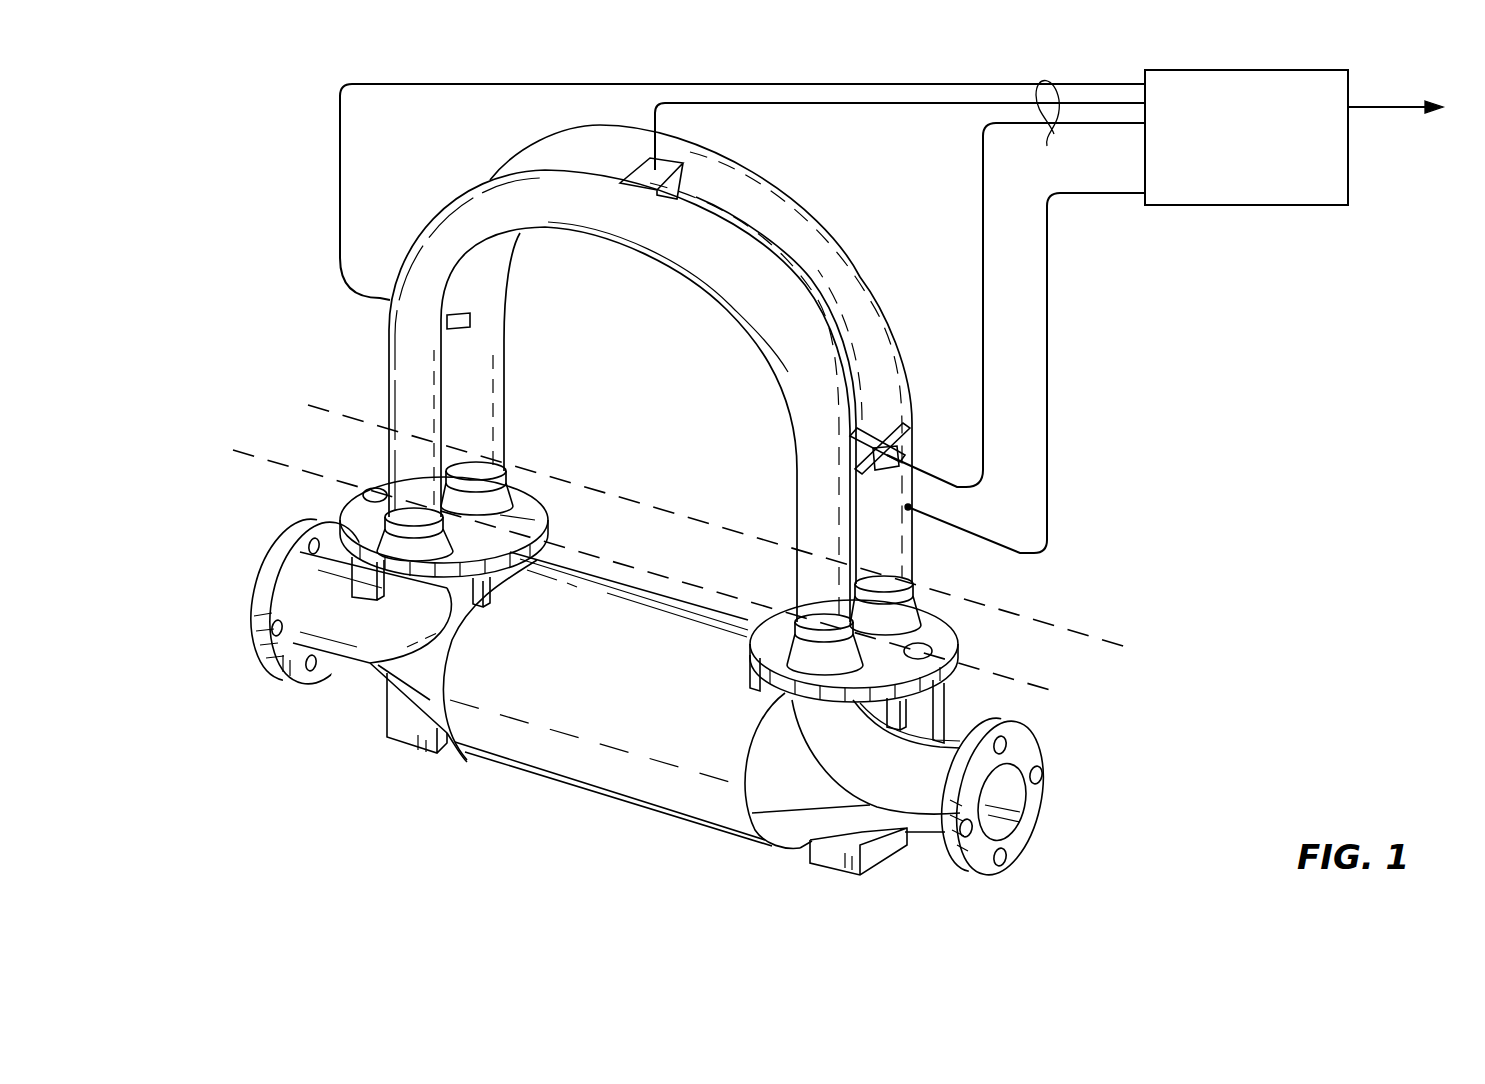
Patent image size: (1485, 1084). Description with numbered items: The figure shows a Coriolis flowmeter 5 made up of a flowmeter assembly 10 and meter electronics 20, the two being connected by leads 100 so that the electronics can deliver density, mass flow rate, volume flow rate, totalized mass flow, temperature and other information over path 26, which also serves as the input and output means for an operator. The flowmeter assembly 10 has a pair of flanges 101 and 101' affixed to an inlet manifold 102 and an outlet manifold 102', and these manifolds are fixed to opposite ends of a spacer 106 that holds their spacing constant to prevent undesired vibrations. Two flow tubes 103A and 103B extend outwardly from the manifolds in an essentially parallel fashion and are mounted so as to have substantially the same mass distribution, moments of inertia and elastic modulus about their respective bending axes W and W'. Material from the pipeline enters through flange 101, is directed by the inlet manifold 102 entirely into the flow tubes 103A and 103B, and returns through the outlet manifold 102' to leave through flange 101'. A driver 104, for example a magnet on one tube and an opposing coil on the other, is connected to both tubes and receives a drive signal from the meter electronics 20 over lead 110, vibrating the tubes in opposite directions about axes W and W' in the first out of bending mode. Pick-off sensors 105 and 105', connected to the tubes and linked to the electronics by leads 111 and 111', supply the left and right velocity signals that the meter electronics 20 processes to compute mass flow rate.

The flowmeter assembly 10 is at (196, 228).
The Coriolis flowmeter 5 is at (1103, 416).
The meter electronics 20 is at (1245, 206).
The path 26 is at (1388, 110).
The leads 100 is at (1025, 317).
The lead 110 is at (910, 104).
The lead 111 is at (700, 192).
The lead 111' is at (1016, 305).
The flange 101 is at (283, 601).
The flange 101' is at (1027, 796).
The inlet manifold 102 is at (420, 619).
The outlet manifold 102' is at (828, 739).
The flow tube 103A is at (403, 337).
The flow tube 103B is at (815, 220).
The driver 104 is at (663, 163).
The pick-off sensor 105 is at (509, 298).
The pick-off sensor 105' is at (911, 423).
The spacer 106 is at (632, 777).
The bending axis W is at (716, 527).
The bending axis W' is at (641, 571).